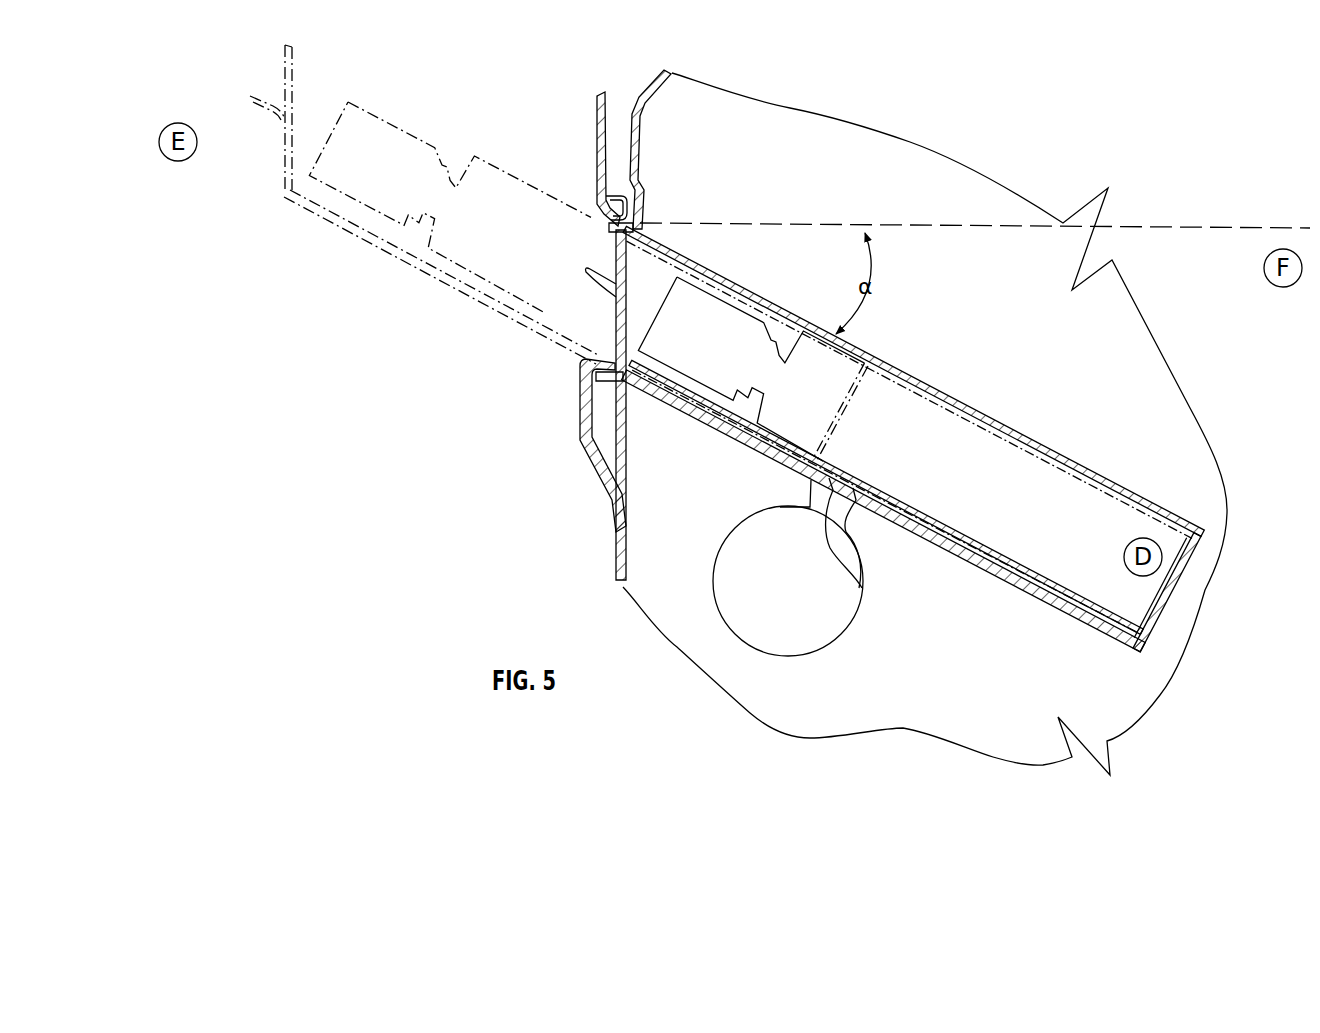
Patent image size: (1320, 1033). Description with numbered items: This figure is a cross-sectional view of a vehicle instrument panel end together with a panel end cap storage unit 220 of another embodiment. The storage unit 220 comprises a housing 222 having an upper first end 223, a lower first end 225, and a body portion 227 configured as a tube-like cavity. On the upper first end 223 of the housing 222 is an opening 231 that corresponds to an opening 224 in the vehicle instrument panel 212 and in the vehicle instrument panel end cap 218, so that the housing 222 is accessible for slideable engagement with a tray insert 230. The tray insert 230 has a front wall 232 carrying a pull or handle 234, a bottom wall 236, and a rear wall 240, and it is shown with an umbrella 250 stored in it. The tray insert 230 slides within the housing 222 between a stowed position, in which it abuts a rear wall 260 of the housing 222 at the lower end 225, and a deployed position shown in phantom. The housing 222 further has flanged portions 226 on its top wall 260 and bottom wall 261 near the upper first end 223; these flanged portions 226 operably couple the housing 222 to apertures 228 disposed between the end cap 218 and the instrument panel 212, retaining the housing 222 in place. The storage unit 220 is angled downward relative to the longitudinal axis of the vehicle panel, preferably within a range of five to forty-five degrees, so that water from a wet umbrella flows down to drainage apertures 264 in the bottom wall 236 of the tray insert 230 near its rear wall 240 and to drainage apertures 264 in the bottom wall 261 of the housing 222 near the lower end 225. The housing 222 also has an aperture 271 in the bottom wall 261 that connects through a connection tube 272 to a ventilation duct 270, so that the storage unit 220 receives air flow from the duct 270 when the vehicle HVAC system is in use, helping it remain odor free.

The vehicle instrument panel 212 is at (647, 92).
The vehicle instrument panel end cap 218 is at (594, 158).
The panel end cap storage unit 220 is at (750, 238).
The housing 222 is at (931, 415).
The upper first end 223 is at (708, 252).
The opening 224 is at (589, 336).
The lower first end 225 is at (1185, 515).
The flanged portions 226 is at (631, 188).
The body portion 227 is at (1018, 467).
The apertures 228 is at (622, 224).
The tray insert 230 is at (398, 200).
The opening 231 is at (633, 251).
The front wall 232 is at (278, 153).
The pull or handle 234 is at (250, 98).
The bottom wall 236 is at (445, 278).
The rear wall 240 is at (850, 415).
The umbrella 250 is at (383, 140).
The rear wall 260 is at (705, 266).
The bottom wall 261 is at (665, 402).
The drainage apertures 264 is at (1123, 622).
The ventilation duct 270 is at (847, 623).
The aperture 271 is at (862, 590).
The connection tube 272 is at (800, 490).